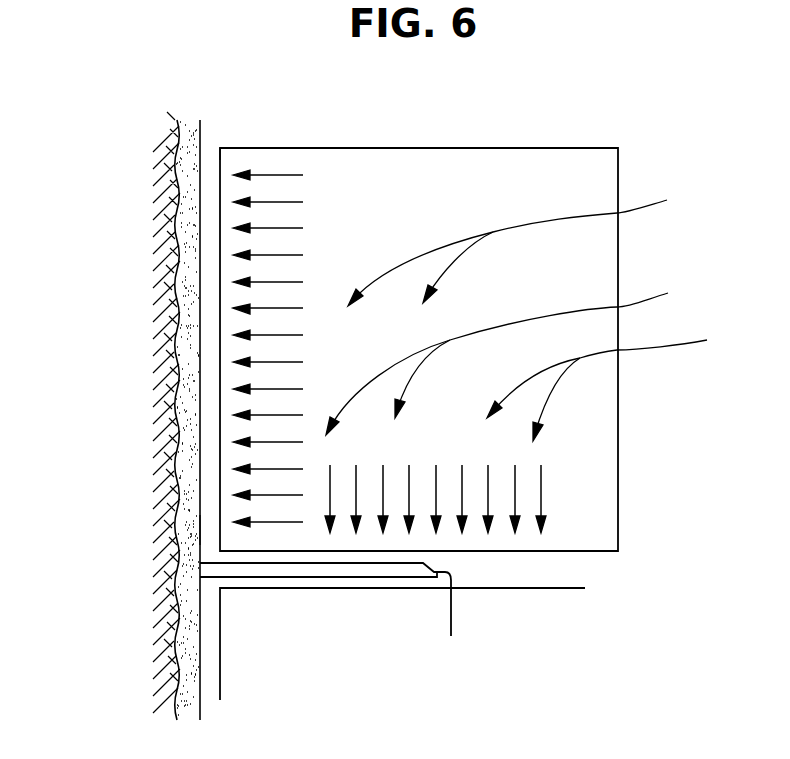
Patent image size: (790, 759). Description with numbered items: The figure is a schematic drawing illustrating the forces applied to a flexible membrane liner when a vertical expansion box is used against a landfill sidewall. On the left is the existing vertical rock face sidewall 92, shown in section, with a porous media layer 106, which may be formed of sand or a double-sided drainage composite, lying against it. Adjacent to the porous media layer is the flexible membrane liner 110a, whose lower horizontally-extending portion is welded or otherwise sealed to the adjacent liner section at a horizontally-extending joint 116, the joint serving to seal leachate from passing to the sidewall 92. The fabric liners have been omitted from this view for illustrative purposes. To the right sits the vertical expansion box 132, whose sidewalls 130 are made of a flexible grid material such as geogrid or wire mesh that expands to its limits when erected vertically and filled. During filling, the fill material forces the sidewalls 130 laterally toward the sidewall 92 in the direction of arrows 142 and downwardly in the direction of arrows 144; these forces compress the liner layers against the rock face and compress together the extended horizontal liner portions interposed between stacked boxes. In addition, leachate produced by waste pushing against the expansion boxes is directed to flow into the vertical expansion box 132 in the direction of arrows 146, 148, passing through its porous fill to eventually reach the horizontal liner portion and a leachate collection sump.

The vertically-extending sidewall 92 is at (165, 237).
The porous media layer 106 is at (190, 660).
The flexible membrane liner 110a is at (190, 530).
The joint 116 is at (392, 631).
The sidewalls of the vertical expansion box 130 is at (218, 158).
The vertical expansion box 132 is at (598, 526).
The arrows 142 is at (287, 228).
The arrows 144 is at (411, 478).
The arrows 146 is at (573, 213).
The arrows 148 is at (590, 307).